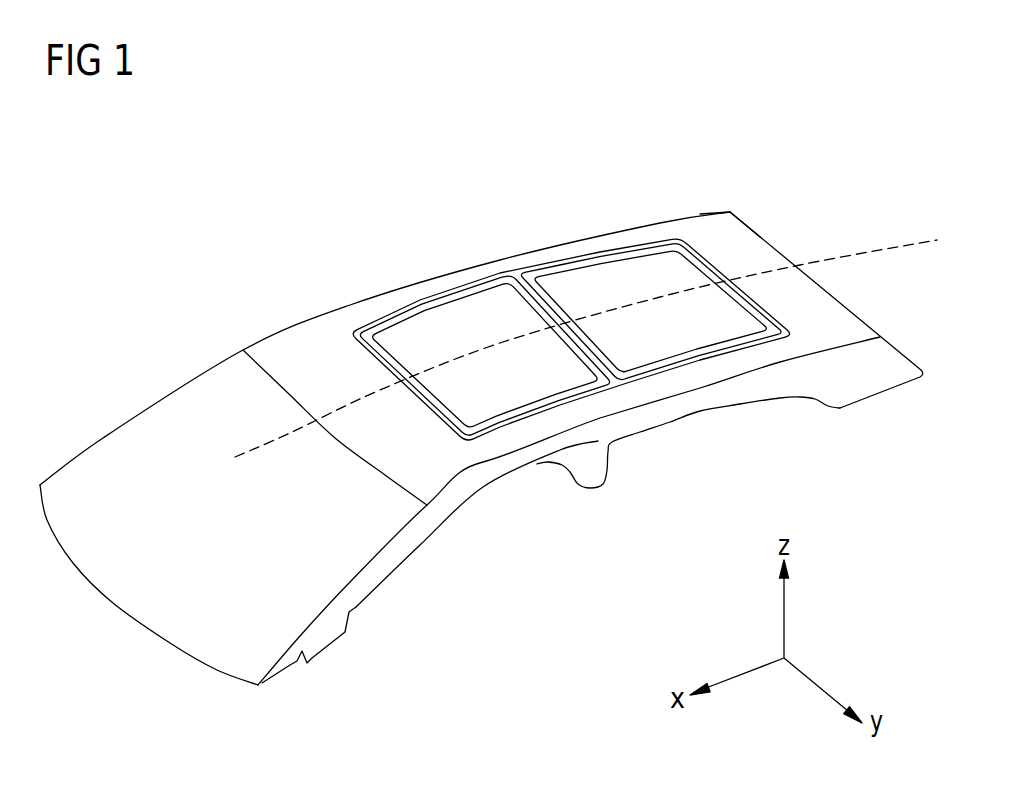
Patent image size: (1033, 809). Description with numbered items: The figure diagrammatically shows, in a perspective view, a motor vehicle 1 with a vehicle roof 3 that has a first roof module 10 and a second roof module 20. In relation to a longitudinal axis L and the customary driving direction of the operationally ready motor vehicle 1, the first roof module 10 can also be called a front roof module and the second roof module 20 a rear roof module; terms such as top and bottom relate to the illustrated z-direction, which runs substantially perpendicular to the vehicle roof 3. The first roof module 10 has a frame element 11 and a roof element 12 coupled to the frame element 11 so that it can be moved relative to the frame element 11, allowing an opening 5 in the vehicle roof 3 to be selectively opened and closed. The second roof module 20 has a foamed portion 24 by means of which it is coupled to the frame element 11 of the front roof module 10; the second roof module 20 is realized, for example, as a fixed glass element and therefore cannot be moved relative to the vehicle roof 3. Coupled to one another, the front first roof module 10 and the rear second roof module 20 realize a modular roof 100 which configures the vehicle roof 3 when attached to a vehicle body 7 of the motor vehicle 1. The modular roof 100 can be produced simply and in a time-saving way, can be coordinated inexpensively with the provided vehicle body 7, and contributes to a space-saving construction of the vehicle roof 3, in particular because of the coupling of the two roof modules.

The modular roof 100 is at (476, 128).
The motor vehicle 1 is at (212, 252).
The vehicle roof 3 is at (724, 230).
The opening 5 is at (503, 300).
The vehicle body 7 is at (817, 382).
The first roof module 10 is at (400, 252).
The frame element 11 is at (462, 290).
The roof element 12 is at (490, 400).
The second roof module 20 is at (606, 198).
The foamed portion 24 is at (693, 358).
The longitudinal axis L is at (897, 245).